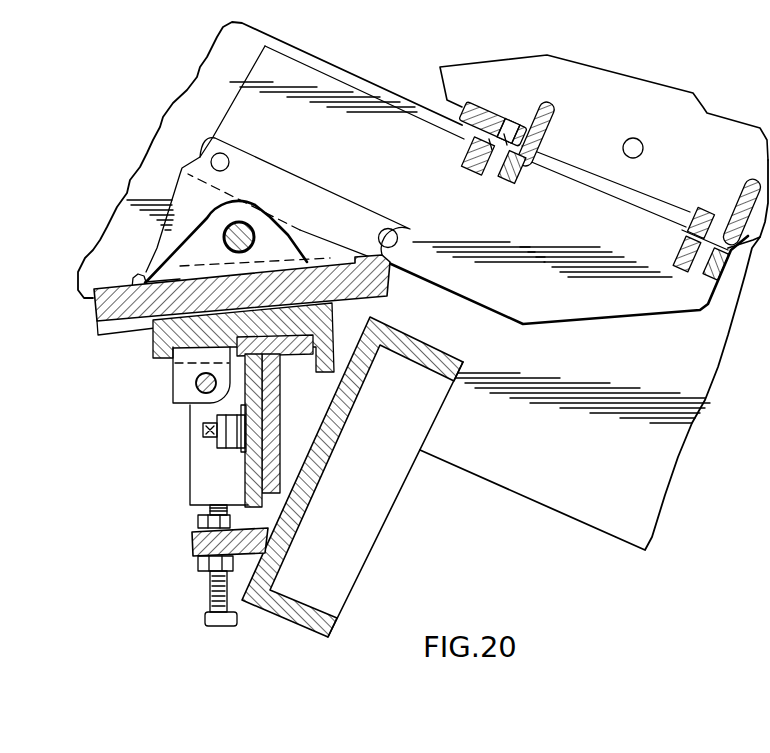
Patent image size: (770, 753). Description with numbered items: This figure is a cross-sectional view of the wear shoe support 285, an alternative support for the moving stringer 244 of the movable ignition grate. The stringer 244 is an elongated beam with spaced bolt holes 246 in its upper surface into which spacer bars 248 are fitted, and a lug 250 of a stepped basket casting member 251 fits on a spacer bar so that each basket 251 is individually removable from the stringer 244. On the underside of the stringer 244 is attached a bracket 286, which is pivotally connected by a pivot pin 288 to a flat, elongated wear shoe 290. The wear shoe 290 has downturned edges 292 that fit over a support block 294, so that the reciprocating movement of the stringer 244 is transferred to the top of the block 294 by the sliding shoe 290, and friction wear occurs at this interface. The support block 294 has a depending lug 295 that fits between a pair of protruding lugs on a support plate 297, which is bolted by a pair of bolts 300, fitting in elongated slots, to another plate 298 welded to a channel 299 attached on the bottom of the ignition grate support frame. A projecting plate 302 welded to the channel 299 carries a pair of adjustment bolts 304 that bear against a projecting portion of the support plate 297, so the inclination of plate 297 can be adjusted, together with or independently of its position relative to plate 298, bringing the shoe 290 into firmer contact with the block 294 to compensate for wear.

The stringer 244 is at (325, 132).
The basket casting member 251 is at (632, 88).
The lug 250 is at (555, 120).
The bolt holes 246 is at (490, 163).
The spacer bars 248 is at (507, 173).
The wear shoe support 285 is at (195, 208).
The bracket 286 is at (330, 202).
The pivot pin 288 is at (258, 242).
The wear shoe 290 is at (383, 283).
The downturned edges 292 is at (118, 337).
The support block 294 is at (330, 317).
The depending lug 295 is at (188, 374).
The support plate 297 is at (250, 397).
The plate 298 is at (274, 427).
The channel 299 is at (310, 478).
The bolts 300 is at (203, 432).
The projecting plate 302 is at (197, 545).
The adjustment bolts 304 is at (210, 589).